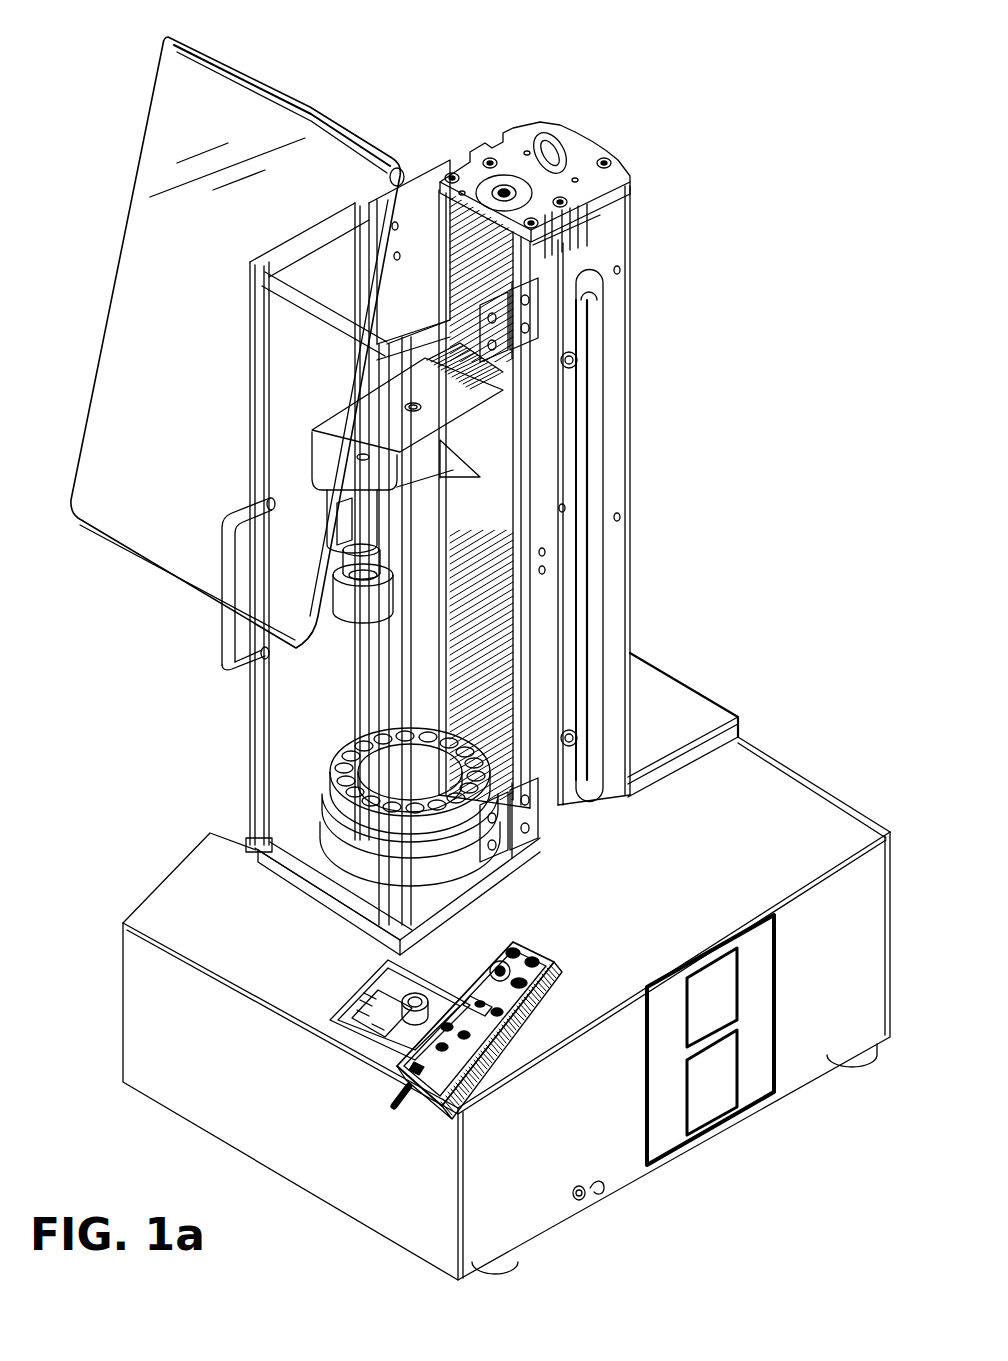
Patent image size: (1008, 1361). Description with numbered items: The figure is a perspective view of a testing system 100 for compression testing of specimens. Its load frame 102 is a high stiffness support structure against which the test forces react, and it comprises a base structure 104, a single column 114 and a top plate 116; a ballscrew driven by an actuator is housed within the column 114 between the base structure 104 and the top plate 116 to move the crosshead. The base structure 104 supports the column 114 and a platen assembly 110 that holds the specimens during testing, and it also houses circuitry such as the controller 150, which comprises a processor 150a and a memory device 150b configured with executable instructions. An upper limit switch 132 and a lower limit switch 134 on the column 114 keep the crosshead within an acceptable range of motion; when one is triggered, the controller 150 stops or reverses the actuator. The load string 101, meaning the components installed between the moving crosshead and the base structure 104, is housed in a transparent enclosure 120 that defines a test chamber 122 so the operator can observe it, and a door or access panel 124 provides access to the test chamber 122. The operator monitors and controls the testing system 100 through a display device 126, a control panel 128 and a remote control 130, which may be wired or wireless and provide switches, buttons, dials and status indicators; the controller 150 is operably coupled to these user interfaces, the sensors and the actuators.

The testing system 100 is at (741, 144).
The load string 101 is at (340, 695).
The load frame 102 is at (665, 392).
The base structure 104 is at (843, 806).
The platen assembly 110 is at (500, 868).
The column 114 is at (630, 473).
The top plate 116 is at (622, 172).
The enclosure 120 is at (253, 348).
The test chamber 122 is at (303, 673).
The door or access panel 124 is at (227, 617).
The display device 126 is at (308, 112).
The control panel 128 is at (357, 993).
The remote control 130 is at (553, 970).
The upper limit switch 132 is at (578, 362).
The lower limit switch 134 is at (570, 735).
The controller 150 is at (783, 973).
The processor 150a is at (712, 997).
The memory device 150b is at (712, 1082).